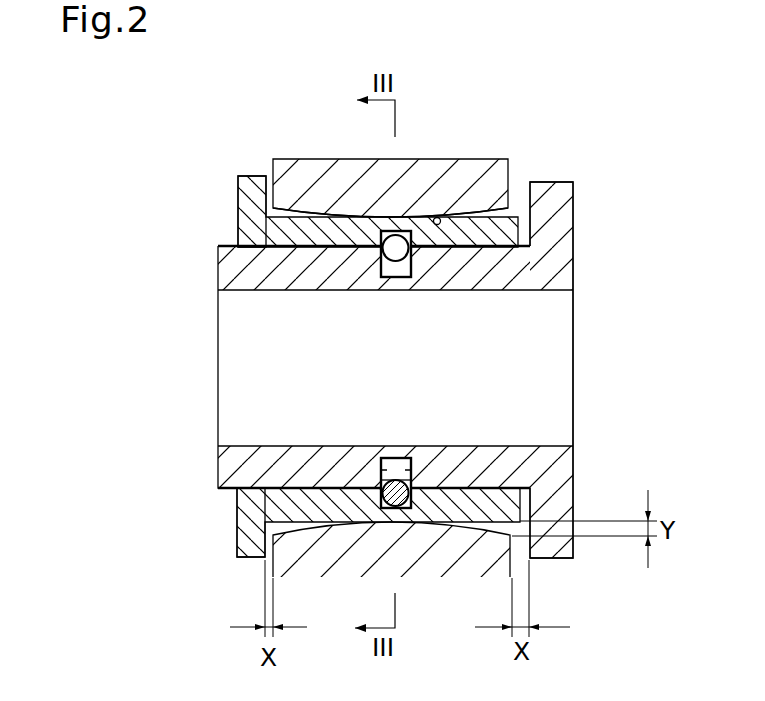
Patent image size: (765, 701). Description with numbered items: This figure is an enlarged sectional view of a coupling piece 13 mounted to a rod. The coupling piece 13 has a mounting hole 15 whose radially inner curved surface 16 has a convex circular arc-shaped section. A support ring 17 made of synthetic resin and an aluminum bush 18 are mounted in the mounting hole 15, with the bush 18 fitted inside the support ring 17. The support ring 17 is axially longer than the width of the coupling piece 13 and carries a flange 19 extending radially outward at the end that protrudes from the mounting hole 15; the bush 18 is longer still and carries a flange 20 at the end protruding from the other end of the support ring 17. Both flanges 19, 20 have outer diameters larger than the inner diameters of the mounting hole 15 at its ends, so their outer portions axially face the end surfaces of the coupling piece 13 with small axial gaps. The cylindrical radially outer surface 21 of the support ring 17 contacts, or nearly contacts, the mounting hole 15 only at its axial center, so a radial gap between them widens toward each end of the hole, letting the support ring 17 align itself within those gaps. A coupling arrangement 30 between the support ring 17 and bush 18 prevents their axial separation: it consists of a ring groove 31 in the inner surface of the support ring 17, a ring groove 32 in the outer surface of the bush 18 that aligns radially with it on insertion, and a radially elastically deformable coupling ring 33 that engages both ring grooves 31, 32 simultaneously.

The coupling piece 13 is at (290, 168).
The cylindrical radially outer surface 21 is at (330, 214).
The radially inner curved surface 16 is at (437, 217).
The mounting hole 15 is at (280, 212).
The support ring 17 is at (292, 232).
The bush 18 is at (247, 268).
The flange 20 is at (557, 206).
The flange 19 is at (243, 528).
The coupling arrangement 30 is at (396, 446).
The ring groove 31 is at (383, 470).
The ring groove 32 is at (414, 468).
The coupling ring 33 is at (406, 466).